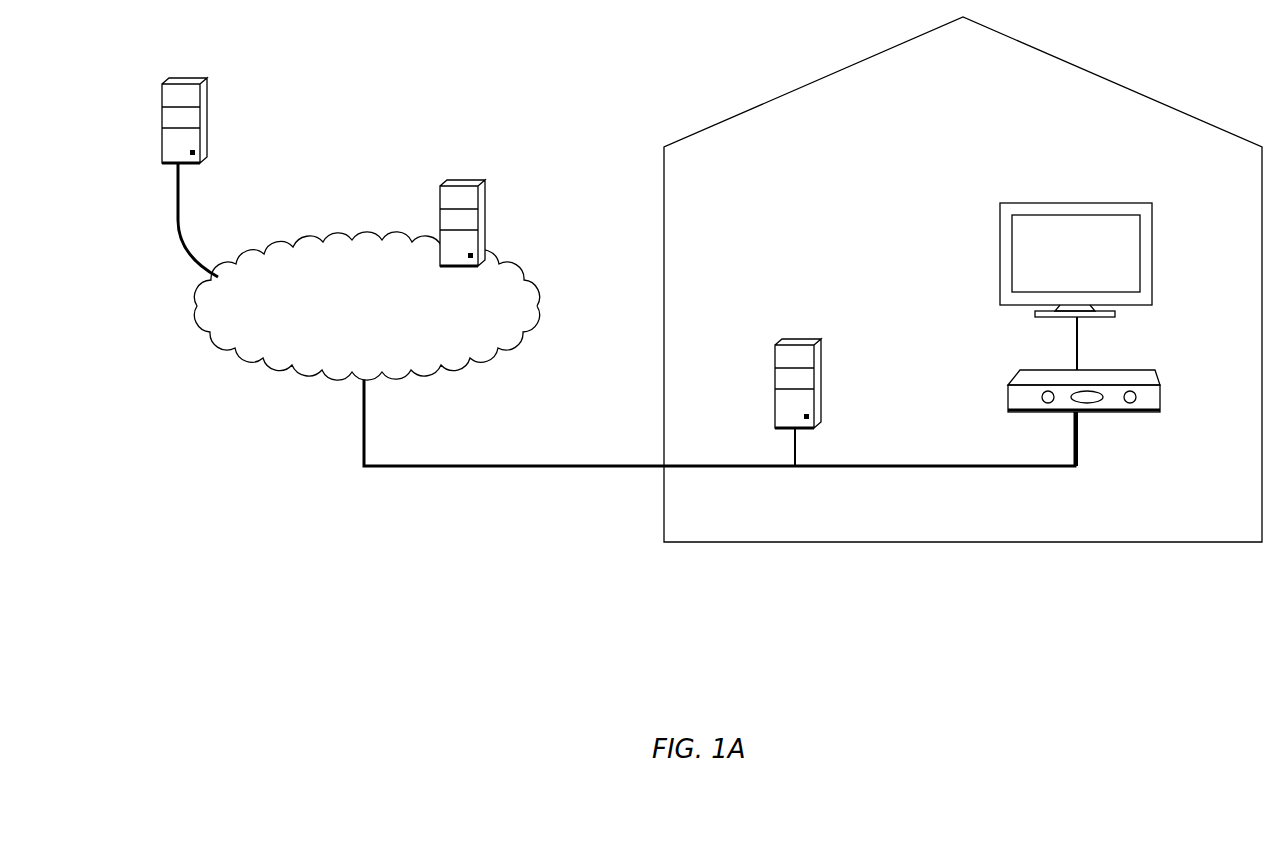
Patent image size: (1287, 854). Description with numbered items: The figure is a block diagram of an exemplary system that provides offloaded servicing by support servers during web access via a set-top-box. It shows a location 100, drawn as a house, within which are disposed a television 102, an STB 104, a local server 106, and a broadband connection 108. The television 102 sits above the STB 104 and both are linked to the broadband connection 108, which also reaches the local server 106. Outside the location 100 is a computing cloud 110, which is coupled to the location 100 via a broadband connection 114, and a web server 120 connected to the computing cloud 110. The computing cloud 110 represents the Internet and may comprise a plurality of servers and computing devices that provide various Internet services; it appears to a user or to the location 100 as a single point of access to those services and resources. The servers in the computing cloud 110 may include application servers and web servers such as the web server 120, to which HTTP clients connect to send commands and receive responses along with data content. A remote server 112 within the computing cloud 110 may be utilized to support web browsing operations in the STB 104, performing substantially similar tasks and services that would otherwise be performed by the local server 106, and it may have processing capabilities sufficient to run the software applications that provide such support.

The location 100 is at (981, 106).
The television 102 is at (1002, 240).
The STB 104 is at (1006, 392).
The local server 106 is at (777, 390).
The broadband connection 108 is at (888, 468).
The computing cloud 110 is at (385, 341).
The remote server 112 is at (487, 233).
The broadband connection 114 is at (477, 468).
The web server 120 is at (163, 124).